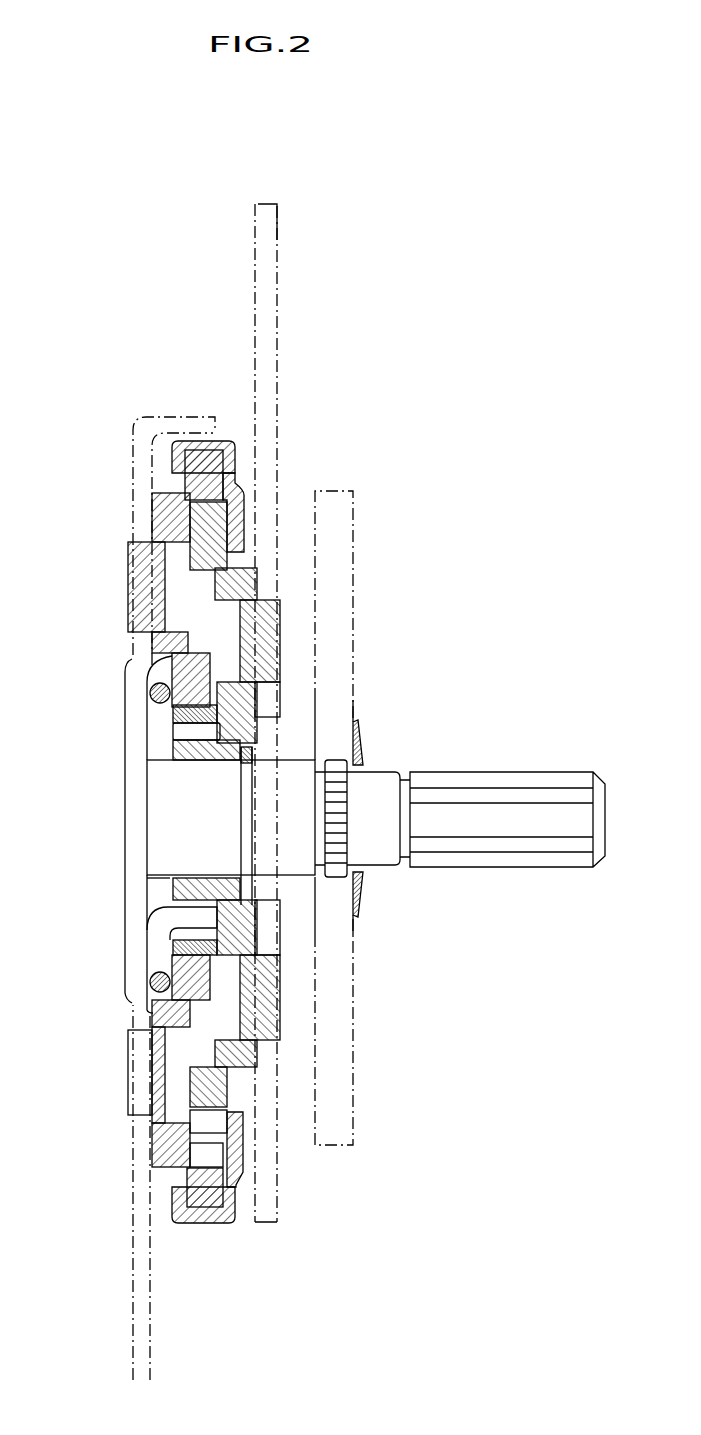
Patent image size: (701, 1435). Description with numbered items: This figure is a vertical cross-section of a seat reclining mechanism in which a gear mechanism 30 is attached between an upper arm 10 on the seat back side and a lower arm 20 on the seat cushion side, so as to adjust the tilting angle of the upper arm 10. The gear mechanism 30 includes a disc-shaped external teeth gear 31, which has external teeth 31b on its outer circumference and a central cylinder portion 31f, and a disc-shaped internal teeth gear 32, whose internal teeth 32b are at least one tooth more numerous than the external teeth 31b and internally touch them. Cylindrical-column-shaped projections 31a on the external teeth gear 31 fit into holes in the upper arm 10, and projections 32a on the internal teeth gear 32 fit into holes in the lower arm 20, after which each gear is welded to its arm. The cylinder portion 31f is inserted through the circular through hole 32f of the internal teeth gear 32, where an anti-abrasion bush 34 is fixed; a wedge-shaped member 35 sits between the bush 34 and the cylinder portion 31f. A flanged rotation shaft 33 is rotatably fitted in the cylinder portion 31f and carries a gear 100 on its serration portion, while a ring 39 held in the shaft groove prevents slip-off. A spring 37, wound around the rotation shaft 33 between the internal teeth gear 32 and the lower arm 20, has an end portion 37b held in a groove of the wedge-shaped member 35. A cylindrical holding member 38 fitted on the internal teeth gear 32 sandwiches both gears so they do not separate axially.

The upper arm 10 is at (285, 276).
The lower arm 20 is at (152, 1287).
The gear mechanism 30 is at (289, 718).
The external teeth gear 31 is at (222, 1078).
The projections 31a is at (282, 625).
The external teeth 31b is at (217, 1118).
The cylinder portion 31f is at (173, 760).
The internal teeth gear 32 is at (153, 1148).
The projections 32a is at (128, 577).
The internal teeth 32b is at (220, 1160).
The through hole 32f is at (173, 688).
The rotation shaft 33 is at (290, 872).
The bush 34 is at (177, 712).
The wedge-shaped member 35 is at (147, 852).
The spring 37 is at (160, 947).
The end portion 37b is at (192, 912).
The holding member 38 is at (245, 490).
The ring 39 is at (252, 757).
The gear 100 is at (367, 493).